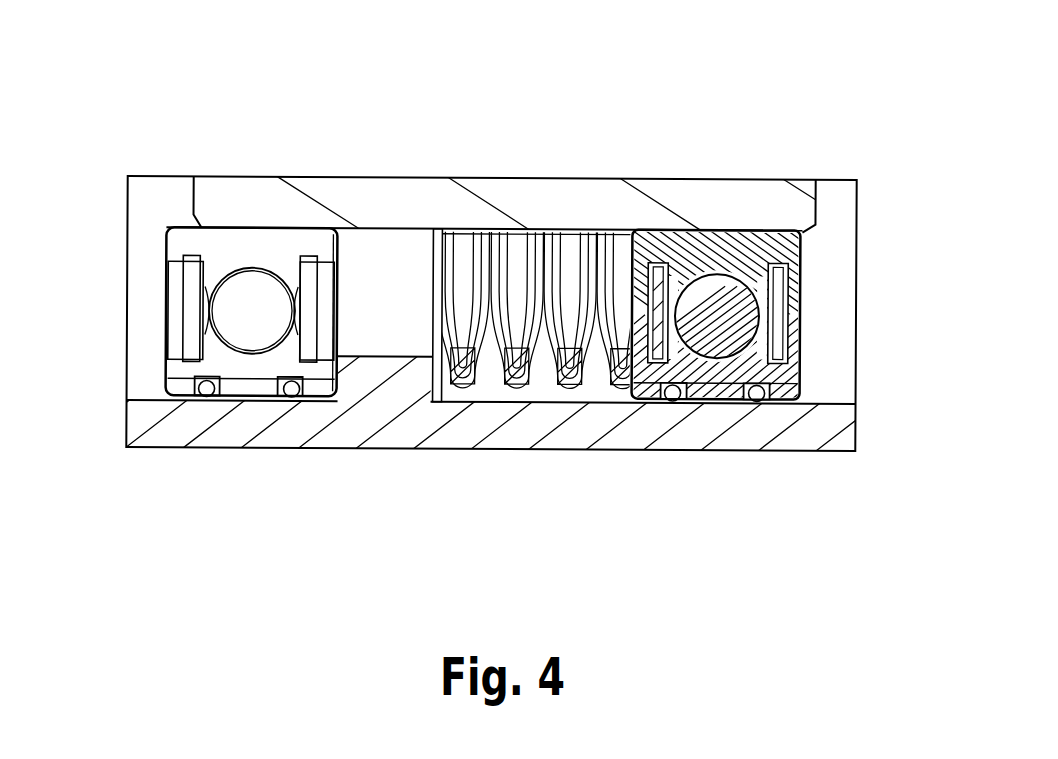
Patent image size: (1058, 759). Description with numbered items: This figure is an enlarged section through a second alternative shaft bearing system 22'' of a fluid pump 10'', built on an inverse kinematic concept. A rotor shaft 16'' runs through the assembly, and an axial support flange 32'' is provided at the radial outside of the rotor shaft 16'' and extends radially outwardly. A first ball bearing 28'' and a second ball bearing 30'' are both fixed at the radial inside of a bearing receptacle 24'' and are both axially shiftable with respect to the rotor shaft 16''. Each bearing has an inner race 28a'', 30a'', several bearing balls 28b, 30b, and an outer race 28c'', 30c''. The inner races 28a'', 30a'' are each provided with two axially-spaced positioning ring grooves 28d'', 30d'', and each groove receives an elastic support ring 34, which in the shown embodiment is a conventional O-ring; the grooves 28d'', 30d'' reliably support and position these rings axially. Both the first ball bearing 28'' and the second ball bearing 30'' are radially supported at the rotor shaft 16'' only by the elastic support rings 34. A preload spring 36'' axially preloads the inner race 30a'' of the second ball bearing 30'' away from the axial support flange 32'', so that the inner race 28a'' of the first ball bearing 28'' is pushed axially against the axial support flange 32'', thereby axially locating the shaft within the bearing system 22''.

The connector assembly 10'' is at (536, 249).
The rotor shaft 16'' is at (501, 433).
The shaft bearing system 22'' is at (454, 130).
The bearing receptacle 24'' is at (874, 183).
The first ball bearing 28'' is at (183, 341).
The inner race 28a'' is at (181, 403).
The bearing balls 28b is at (240, 313).
The outer race 28c'' is at (194, 244).
The positioning ring grooves 28d'' is at (248, 465).
The second ball bearing 30'' is at (741, 373).
The inner race 30a'' is at (786, 377).
The bearing balls 30b is at (735, 329).
The outer race 30c'' is at (795, 286).
The positioning ring grooves 30d'' is at (715, 462).
The axial support flange 32'' is at (391, 256).
The elastic support ring 34 is at (210, 398).
The preload spring 36'' is at (542, 373).